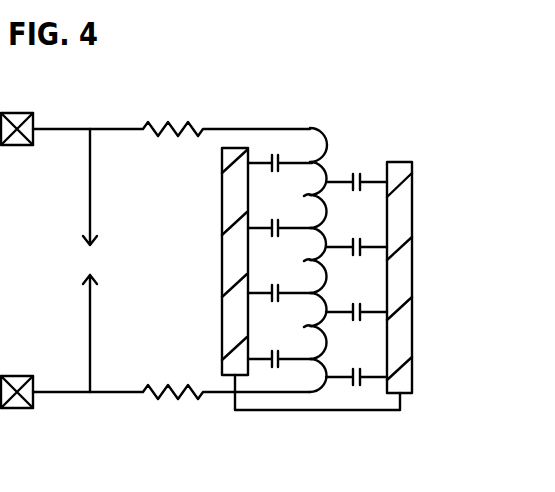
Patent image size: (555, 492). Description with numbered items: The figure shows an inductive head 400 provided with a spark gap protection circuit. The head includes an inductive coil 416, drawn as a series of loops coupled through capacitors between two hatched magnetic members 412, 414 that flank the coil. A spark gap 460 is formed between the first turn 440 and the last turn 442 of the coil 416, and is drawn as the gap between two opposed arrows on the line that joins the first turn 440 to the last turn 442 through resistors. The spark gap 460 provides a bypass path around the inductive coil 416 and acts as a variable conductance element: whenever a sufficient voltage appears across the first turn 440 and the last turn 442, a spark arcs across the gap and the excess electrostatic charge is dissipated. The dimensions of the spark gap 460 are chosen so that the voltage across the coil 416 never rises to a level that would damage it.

The inductive head 400 is at (238, 75).
The magnetic core member 412 is at (405, 161).
The magnetic core member 414 is at (231, 204).
The coil 416 is at (303, 397).
The first turn 440 is at (64, 127).
The last turn 442 is at (61, 395).
The spark gap 460 is at (68, 259).